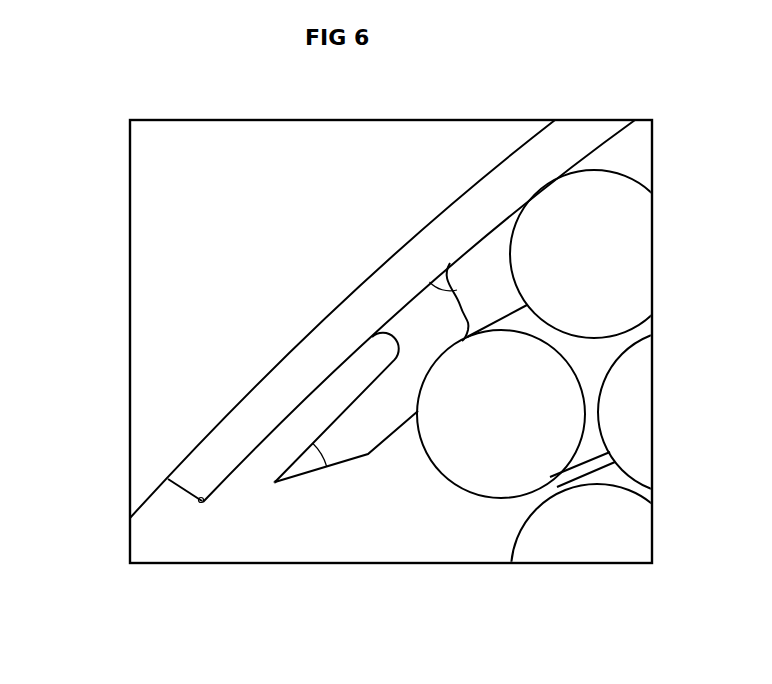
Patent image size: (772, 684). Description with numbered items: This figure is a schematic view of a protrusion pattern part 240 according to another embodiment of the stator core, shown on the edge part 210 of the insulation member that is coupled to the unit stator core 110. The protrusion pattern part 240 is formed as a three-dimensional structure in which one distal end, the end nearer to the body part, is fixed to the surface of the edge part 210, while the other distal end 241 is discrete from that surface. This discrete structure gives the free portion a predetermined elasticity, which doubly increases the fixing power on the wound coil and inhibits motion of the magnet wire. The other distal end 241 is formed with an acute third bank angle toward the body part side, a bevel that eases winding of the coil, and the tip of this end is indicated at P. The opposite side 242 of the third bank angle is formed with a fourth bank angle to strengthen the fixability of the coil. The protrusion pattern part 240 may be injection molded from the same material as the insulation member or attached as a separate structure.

The unit stator core 110 is at (155, 325).
The edge part 210 is at (195, 482).
The protrusion pattern part 240 is at (387, 418).
The other distal end 241 is at (334, 465).
The opposite side 242 is at (452, 277).
The tip point of protrusion P is at (313, 426).